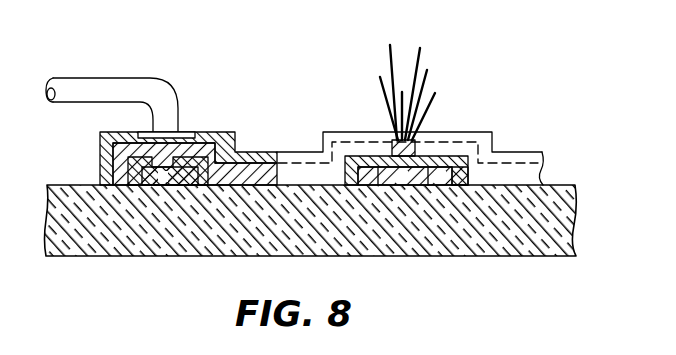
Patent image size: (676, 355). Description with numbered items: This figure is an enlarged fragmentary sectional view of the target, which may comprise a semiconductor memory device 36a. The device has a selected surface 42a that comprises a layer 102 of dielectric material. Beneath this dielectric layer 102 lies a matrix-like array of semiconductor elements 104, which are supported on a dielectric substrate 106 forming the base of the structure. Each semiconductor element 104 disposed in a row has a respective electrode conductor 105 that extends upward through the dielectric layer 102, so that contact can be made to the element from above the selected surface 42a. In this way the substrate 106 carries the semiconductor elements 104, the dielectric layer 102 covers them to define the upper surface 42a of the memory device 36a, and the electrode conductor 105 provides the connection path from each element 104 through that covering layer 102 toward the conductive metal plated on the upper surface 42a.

The layer of dielectric material 102 is at (256, 153).
The semiconductor element 104 is at (467, 177).
The electrode conductor 105 is at (413, 153).
The dielectric substrate 106 is at (185, 248).
The selected surface 42a is at (480, 128).
The semiconductor memory device 36a is at (552, 178).